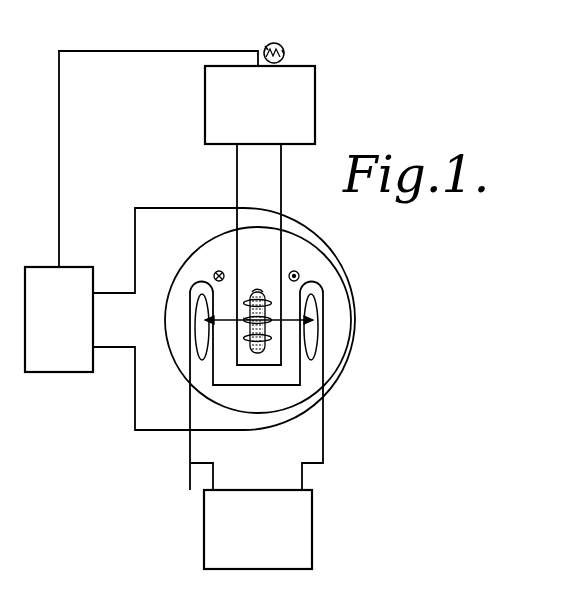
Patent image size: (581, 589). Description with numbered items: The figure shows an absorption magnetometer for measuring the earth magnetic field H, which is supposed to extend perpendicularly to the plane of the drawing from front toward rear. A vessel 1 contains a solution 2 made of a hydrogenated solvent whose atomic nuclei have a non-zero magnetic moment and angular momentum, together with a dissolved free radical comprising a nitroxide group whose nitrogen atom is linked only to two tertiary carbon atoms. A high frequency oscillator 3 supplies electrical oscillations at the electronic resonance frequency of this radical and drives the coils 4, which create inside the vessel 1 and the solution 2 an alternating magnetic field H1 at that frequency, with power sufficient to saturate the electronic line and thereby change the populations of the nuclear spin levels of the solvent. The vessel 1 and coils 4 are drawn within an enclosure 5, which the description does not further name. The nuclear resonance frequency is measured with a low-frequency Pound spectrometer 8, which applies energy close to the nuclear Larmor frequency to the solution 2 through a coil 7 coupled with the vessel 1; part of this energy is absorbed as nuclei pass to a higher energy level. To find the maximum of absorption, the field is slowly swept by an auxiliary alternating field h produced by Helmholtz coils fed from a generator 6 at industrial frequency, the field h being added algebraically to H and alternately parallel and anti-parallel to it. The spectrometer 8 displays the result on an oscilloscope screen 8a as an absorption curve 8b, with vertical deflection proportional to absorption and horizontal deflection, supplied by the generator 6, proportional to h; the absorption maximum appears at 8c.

The vessel 1 is at (259, 292).
The solution 2 is at (264, 352).
The high frequency oscillator 3 is at (286, 490).
The coils 4 is at (196, 346).
The housing 5 is at (217, 403).
The generator 6 is at (44, 373).
The coil 7 is at (243, 327).
The Pound spectrometer 8 is at (205, 104).
The oscilloscope screen 8a is at (284, 52).
The absorption curve 8b is at (266, 46).
The maximum of absorption 8c is at (276, 44).
The earth magnetic field H is at (215, 272).
The auxiliary field h is at (297, 272).
The alternating magnetic field H1 is at (246, 319).